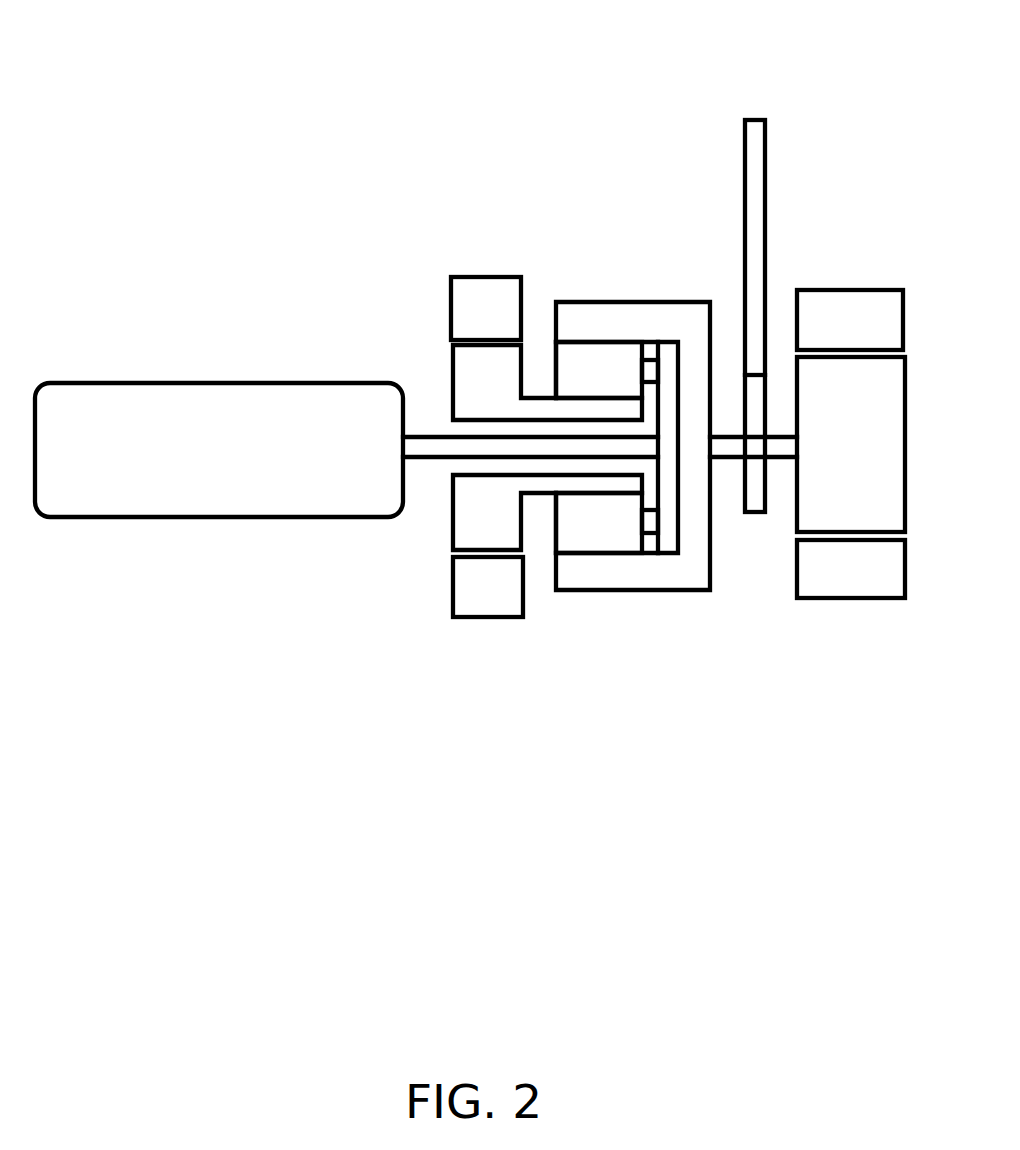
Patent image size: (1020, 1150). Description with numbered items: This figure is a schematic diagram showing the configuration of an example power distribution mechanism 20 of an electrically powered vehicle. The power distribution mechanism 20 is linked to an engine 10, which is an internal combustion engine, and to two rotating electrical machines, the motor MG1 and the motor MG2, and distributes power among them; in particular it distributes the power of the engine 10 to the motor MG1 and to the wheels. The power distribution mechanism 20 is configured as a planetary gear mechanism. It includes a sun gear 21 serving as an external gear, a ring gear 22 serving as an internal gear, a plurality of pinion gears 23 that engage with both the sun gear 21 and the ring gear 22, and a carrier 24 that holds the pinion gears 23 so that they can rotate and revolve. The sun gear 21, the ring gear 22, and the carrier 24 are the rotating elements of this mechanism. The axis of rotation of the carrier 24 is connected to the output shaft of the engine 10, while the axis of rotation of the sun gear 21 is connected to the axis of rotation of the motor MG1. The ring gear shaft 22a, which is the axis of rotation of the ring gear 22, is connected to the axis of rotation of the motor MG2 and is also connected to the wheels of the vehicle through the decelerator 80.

The engine 10 is at (226, 383).
The power distribution mechanism 20 is at (674, 447).
The sun gear 21 is at (583, 495).
The ring gear 22 is at (680, 592).
The ring gear shaft 22a is at (732, 457).
The pinion gears 23 is at (613, 553).
The carrier 24 is at (653, 465).
The decelerator 80 is at (770, 96).
The motor MG1 is at (487, 277).
The motor MG2 is at (848, 290).